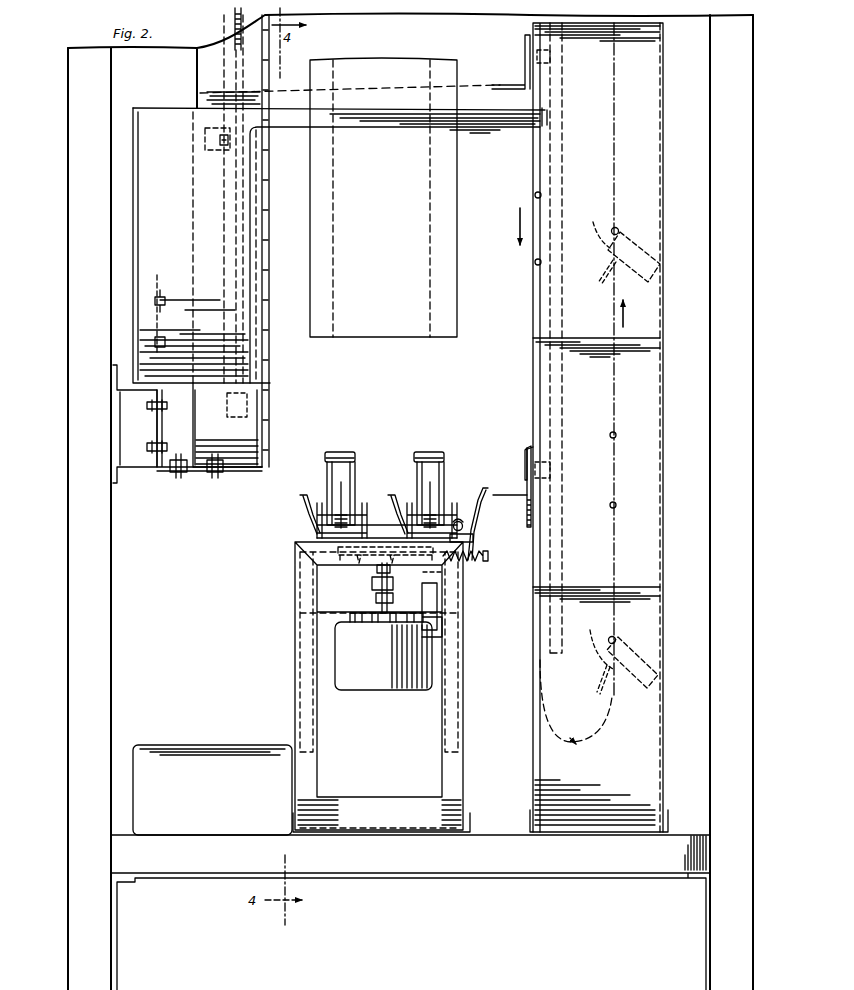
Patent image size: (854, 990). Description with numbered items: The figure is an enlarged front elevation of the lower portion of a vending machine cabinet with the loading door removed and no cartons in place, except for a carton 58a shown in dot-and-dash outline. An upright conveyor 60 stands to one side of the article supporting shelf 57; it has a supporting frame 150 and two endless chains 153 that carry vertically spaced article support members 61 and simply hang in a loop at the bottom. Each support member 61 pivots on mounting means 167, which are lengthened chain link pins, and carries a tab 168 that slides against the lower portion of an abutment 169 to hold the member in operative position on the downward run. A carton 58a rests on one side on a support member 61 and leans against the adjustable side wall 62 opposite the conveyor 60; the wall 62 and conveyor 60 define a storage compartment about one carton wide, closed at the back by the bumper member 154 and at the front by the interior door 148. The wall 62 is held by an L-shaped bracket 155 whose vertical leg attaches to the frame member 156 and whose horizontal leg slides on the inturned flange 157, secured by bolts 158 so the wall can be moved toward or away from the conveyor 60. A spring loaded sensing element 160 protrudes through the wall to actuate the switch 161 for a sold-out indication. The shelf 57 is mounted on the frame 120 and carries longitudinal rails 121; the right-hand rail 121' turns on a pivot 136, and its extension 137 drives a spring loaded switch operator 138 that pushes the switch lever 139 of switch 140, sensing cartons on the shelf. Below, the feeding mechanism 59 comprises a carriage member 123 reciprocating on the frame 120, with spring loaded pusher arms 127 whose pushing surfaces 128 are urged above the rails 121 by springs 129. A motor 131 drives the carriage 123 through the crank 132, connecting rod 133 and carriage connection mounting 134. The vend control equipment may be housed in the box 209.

The interior door 148 is at (140, 108).
The switch 161 is at (205, 136).
The carton 58a is at (372, 83).
The article support member 61 is at (506, 85).
The article support member mounting means 167 is at (552, 57).
The tab 168 is at (645, 244).
The bumper member 154 is at (420, 300).
The endless chain 153 is at (533, 350).
The sensing element 160 is at (270, 362).
The adjustable side wall 62 is at (264, 433).
The conveyor 60 is at (523, 451).
The spring loaded pusher arm 127 is at (341, 452).
The pushing surface 128 is at (326, 461).
The rail 121 is at (339, 503).
The pivoted rail 121' is at (486, 507).
The spring 129 is at (337, 512).
The pivot 136 is at (465, 523).
The extension 137 is at (474, 538).
The spring loaded switch operator 138 is at (488, 558).
The article supporting shelf 57 is at (306, 507).
The frame 120 is at (295, 573).
The carriage member 123 is at (359, 555).
The switch lever 139 is at (421, 572).
The feeding mechanism 59 is at (338, 566).
The carriage connection mounting 134 is at (376, 578).
The connecting rod 133 is at (392, 585).
The crank 132 is at (376, 598).
The switch 140 is at (437, 630).
The motor 131 is at (357, 690).
The abutment 169 is at (581, 383).
The supporting frame 150 is at (660, 742).
The frame member 156 is at (138, 470).
The L-shaped bracket 155 is at (163, 473).
The inturned flange 157 is at (201, 473).
The bolt 158 is at (179, 474).
The box 209 is at (202, 749).